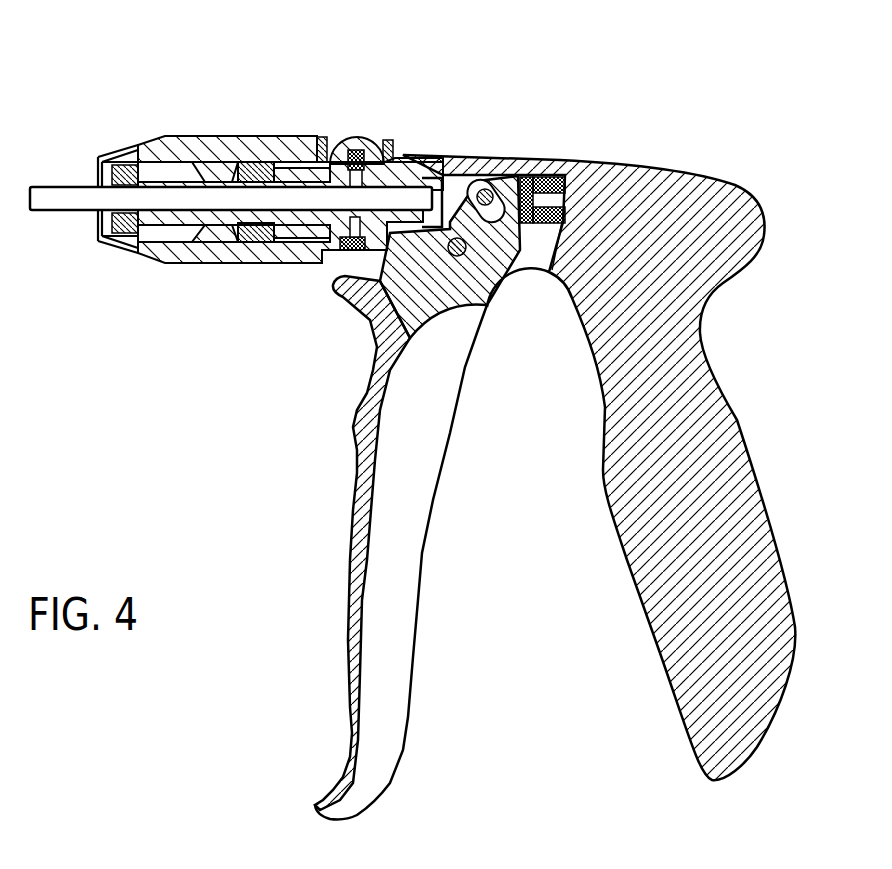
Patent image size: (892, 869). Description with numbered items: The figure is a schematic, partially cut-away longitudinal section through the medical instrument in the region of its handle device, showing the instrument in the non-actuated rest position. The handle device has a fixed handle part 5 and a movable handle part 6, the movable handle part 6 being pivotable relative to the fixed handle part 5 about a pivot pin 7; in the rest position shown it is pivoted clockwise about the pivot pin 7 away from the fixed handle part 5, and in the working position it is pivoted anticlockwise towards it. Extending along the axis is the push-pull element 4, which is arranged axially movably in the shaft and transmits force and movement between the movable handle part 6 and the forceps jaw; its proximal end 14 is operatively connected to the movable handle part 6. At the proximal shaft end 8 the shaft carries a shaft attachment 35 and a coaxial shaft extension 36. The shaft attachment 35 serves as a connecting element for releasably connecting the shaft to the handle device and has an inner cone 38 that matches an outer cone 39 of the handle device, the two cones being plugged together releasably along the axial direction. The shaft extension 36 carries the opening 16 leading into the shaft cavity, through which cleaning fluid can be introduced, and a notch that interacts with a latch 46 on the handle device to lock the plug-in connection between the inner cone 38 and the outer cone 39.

The push-pull element 4 is at (67, 212).
The fixed handle part 5 is at (710, 407).
The movable handle part 6 is at (377, 582).
The pivot pin 7 is at (492, 304).
The proximal shaft end 8 is at (285, 97).
The proximal end 14 is at (437, 185).
The opening 16 is at (395, 178).
The shaft attachment 35 is at (162, 148).
The shaft extension 36 is at (258, 242).
The inner cone 38 is at (296, 252).
The outer cone 39 is at (245, 160).
The latch 46 is at (357, 160).